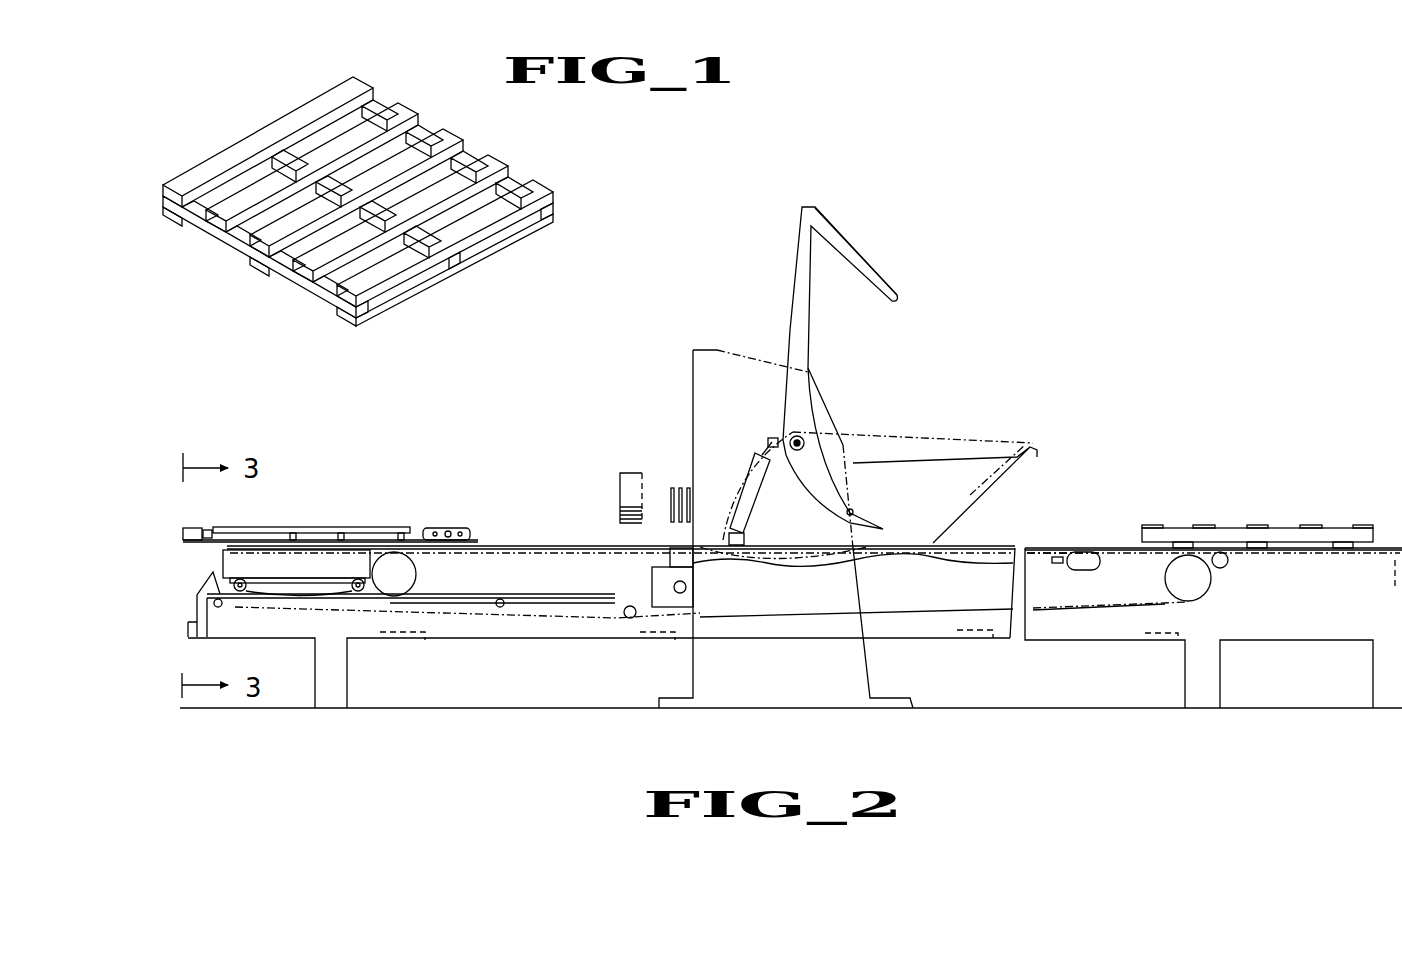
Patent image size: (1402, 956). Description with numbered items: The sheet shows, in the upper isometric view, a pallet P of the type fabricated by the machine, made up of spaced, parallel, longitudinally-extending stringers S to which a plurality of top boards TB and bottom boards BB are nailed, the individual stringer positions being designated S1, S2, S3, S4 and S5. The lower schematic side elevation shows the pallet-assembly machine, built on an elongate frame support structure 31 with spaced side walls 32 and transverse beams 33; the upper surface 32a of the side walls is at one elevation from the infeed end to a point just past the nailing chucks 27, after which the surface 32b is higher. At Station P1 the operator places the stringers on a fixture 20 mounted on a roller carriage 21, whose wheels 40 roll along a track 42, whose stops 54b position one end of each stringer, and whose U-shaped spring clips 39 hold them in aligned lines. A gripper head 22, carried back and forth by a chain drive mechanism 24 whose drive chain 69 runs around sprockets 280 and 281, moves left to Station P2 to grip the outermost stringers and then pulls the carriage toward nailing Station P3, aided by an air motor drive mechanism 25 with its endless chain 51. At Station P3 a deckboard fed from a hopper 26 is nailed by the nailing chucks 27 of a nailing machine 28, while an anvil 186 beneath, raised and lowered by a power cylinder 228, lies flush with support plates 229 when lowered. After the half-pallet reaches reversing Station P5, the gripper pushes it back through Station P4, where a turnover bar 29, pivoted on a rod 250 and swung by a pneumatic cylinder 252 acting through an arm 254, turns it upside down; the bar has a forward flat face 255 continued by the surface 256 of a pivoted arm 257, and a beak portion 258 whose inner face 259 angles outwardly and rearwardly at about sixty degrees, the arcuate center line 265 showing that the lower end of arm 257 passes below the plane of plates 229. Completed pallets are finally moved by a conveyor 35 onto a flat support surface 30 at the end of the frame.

In FIG. 1, the pallet P is at (487, 145).
In FIG. 2, the pallet P is at (1272, 528).
In FIG. 1, the top boards TB is at (448, 133).
In FIG. 1, the bottom boards BB is at (287, 247).
In FIG. 1, the stringers S is at (487, 247).
In FIG. 2, the stringers S is at (363, 528).
In FIG. 1, the first stringer position S1 is at (346, 298).
In FIG. 1, the second stringer position S2 is at (303, 273).
In FIG. 1, the third stringer position S3 is at (260, 248).
In FIG. 1, the fourth stringer position S4 is at (216, 224).
In FIG. 1, the fifth stringer position S5 is at (173, 199).
In FIG. 2, the fixture 20 is at (202, 545).
In FIG. 2, the roller carriage 21 is at (220, 558).
In FIG. 2, the gripper head 22 is at (460, 514).
In FIG. 2, the chain drive mechanism 24 is at (497, 550).
In FIG. 2, the air motor drive mechanism 25 is at (308, 610).
In FIG. 2, the hopper 26 is at (615, 488).
In FIG. 2, the nailing chucks 27 is at (665, 478).
In FIG. 2, the nailing machine 28 is at (827, 388).
In FIG. 2, the turnover bar 29 is at (833, 218).
In FIG. 2, the flat support surface 30 is at (1387, 547).
In FIG. 2, the frame support structure 31 is at (193, 607).
In FIG. 2, the side walls 32 is at (488, 633).
In FIG. 2, the upper surface of side walls 32a is at (633, 593).
In FIG. 2, the upper surface of side members 32b is at (1065, 548).
In FIG. 2, the transverse beams 33 is at (188, 630).
In FIG. 2, the conveyor 35 is at (1103, 572).
In FIG. 2, the U-shaped spring clips 39 is at (295, 528).
In FIG. 2, the wheels 40 is at (296, 573).
In FIG. 2, the track 42 is at (417, 578).
In FIG. 2, the endless chain 51 is at (322, 613).
In FIG. 2, the stop 54b is at (193, 528).
In FIG. 2, the drive chain 69 is at (510, 550).
In FIG. 2, the anvil 186 is at (695, 572).
In FIG. 2, the power cylinder 228 is at (697, 592).
In FIG. 2, the support plates 229 is at (700, 547).
In FIG. 2, the rod 250 is at (800, 435).
In FIG. 2, the pneumatic power cylinder 252 is at (750, 513).
In FIG. 2, the arm 254 is at (773, 442).
In FIG. 2, the forward flat face 255 is at (810, 343).
In FIG. 2, the surface of arm 256 is at (877, 517).
In FIG. 2, the arm 257 is at (867, 513).
In FIG. 2, the beak portion 258 is at (860, 257).
In FIG. 2, the inner face 259 is at (883, 295).
In FIG. 2, the arcuate center line 265 is at (790, 570).
In FIG. 2, the sprockets 280 is at (432, 597).
In FIG. 2, the sprockets 281 is at (1163, 573).
In FIG. 2, the Station P1 is at (322, 512).
In FIG. 2, the Station P2 is at (450, 500).
In FIG. 2, the nailing Station P3 is at (678, 478).
In FIG. 2, the Station P4 is at (928, 478).
In FIG. 2, the reversing Station P5 is at (1118, 528).